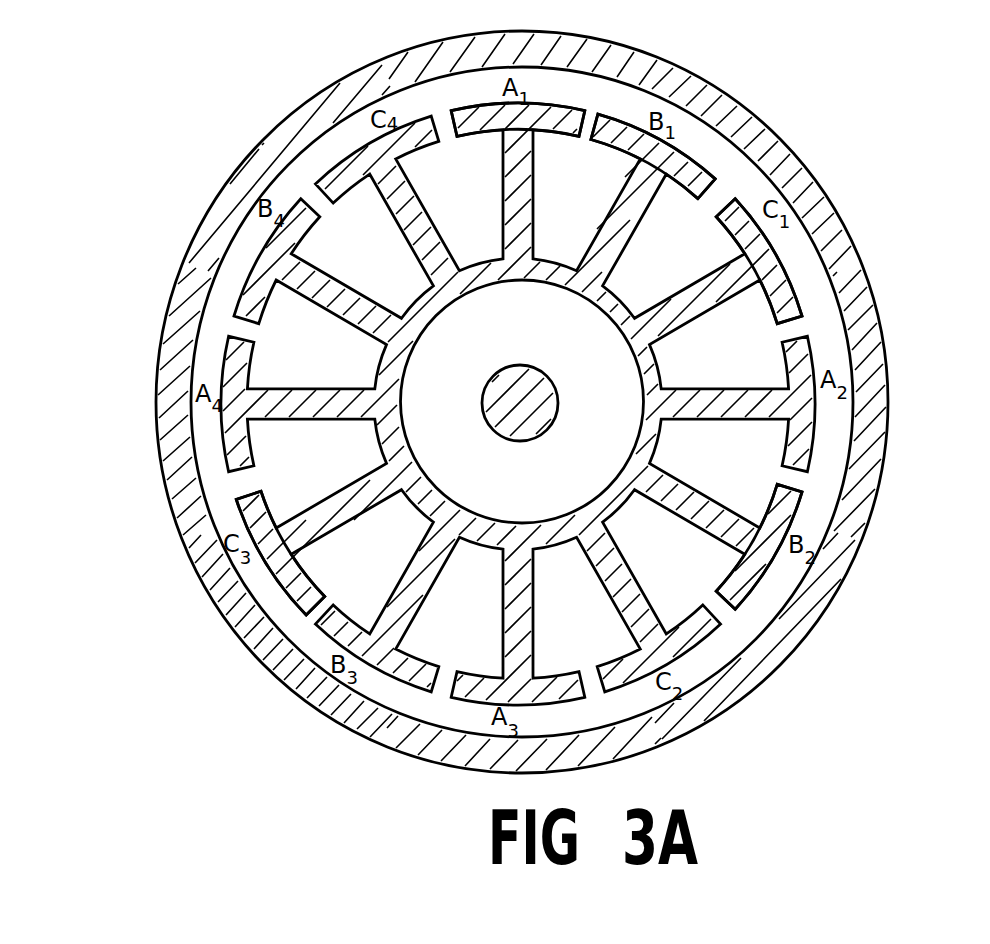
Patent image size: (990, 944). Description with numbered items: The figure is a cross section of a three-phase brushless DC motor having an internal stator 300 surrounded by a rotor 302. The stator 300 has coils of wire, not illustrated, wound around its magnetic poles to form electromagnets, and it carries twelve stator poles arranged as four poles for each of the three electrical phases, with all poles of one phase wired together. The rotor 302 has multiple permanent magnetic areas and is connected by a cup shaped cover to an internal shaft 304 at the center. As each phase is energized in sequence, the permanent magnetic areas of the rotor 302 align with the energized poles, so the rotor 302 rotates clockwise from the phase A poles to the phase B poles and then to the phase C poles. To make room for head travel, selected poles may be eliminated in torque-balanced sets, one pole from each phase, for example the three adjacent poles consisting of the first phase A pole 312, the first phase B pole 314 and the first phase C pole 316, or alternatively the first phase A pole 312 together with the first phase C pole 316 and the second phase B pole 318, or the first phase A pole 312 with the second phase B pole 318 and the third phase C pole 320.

The stator 300 is at (487, 258).
The rotor 302 is at (313, 99).
The internal shaft 304 is at (490, 375).
The pole A1 312 is at (559, 106).
The pole B1 314 is at (693, 158).
The pole C1 316 is at (786, 257).
The pole B2 318 is at (758, 582).
The pole C3 320 is at (273, 583).